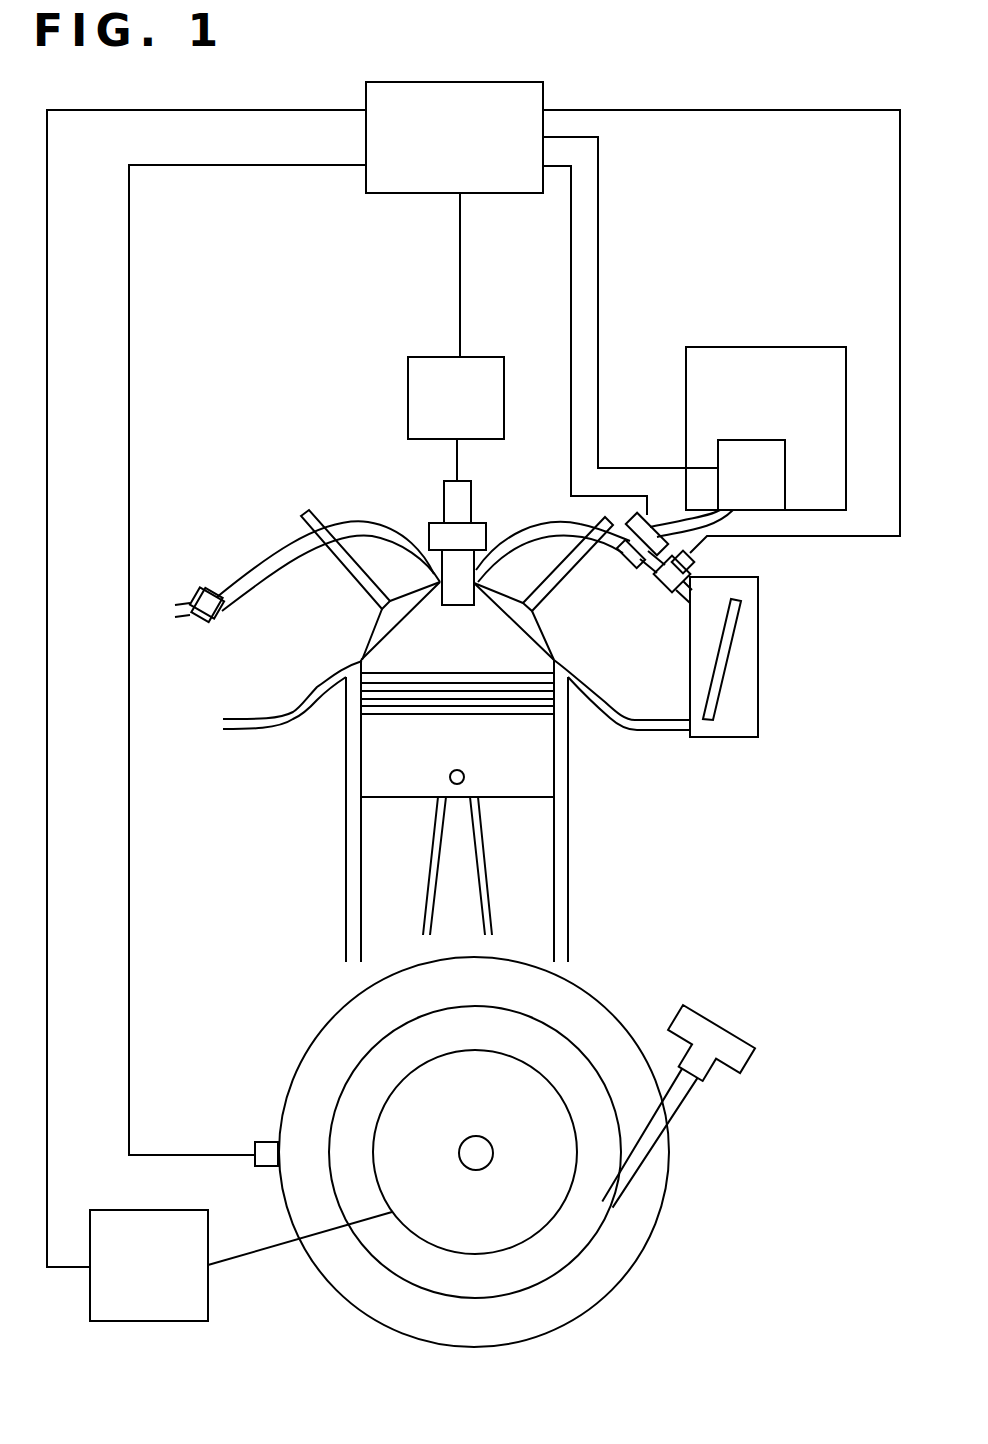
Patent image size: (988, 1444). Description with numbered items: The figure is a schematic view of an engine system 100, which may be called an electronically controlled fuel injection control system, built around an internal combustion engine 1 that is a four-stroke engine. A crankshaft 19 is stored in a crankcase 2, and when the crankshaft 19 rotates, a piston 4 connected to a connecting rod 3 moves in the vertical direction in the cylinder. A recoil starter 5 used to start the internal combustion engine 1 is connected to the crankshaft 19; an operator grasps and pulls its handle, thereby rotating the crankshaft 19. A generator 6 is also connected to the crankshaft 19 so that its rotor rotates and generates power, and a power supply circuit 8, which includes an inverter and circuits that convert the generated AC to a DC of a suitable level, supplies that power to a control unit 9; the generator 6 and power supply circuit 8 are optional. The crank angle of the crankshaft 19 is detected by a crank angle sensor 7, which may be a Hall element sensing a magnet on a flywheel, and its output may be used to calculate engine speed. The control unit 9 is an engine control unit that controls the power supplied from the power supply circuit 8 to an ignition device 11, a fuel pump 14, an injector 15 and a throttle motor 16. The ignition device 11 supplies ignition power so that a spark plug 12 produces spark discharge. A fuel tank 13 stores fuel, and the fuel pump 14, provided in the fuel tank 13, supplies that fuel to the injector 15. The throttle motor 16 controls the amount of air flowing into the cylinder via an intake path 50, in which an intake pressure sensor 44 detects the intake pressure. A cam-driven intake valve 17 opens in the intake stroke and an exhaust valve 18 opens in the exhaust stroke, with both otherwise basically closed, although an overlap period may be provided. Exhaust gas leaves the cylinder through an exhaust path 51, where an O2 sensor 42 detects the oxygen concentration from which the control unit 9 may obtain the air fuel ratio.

The internal combustion engine 1 is at (605, 861).
The crankcase 2 is at (350, 1003).
The connecting rod 3 is at (450, 863).
The piston 4 is at (377, 771).
The recoil starter 5 is at (717, 1023).
The generator 6 is at (513, 1213).
The crank angle sensor 7 is at (263, 1140).
The power supply circuit 8 is at (135, 1210).
The control unit 9 is at (533, 88).
The ignition device 11 is at (488, 364).
The spark plug 12 is at (441, 523).
The fuel tank 13 is at (813, 346).
The fuel pump 14 is at (755, 440).
The injector 15 is at (650, 523).
The throttle motor 16 is at (753, 634).
The intake valve 17 is at (563, 557).
The exhaust valve 18 is at (302, 514).
The crankshaft 19 is at (482, 1137).
The O2 sensor 42 is at (192, 586).
The intake pressure sensor 44 is at (693, 566).
The intake path 50 is at (630, 660).
The exhaust path 51 is at (275, 645).
The engine system 100 is at (690, 86).